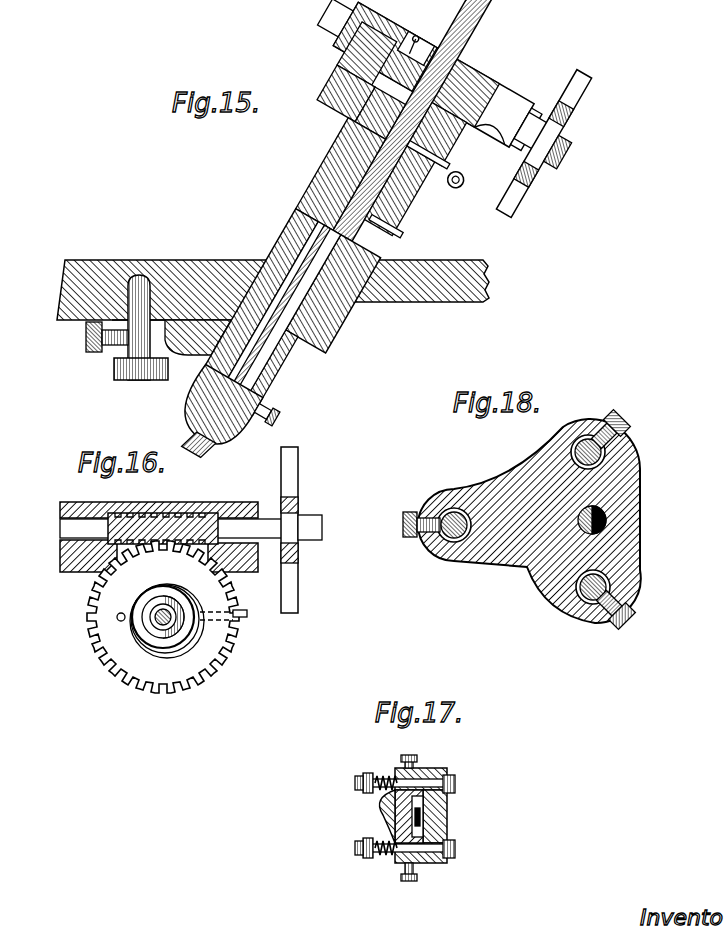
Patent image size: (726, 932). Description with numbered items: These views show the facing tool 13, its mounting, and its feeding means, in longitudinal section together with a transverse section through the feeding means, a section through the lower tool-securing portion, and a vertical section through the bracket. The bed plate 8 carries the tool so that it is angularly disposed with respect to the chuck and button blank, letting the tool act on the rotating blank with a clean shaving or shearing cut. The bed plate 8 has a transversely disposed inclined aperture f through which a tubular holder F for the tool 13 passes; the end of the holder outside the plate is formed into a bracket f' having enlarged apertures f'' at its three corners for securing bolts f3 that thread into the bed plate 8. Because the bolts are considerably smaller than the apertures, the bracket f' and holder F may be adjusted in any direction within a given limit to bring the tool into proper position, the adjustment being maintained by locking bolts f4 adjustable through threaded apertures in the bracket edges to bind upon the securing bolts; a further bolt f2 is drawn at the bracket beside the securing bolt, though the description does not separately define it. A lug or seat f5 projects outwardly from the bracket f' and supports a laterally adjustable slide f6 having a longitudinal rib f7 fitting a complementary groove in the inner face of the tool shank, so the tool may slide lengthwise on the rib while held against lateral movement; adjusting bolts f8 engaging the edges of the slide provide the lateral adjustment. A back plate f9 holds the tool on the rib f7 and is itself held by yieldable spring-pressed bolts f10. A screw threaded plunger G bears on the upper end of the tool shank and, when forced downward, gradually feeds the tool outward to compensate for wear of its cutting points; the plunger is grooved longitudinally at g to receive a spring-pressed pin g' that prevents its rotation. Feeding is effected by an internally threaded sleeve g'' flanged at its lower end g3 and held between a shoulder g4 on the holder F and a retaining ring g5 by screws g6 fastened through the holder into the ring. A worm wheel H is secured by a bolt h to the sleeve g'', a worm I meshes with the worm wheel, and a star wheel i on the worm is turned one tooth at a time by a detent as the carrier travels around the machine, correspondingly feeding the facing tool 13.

In FIG. 15, the bed plate 8 is at (217, 262).
In FIG. 15, the facing tool 13 is at (262, 398).
In FIG. 17, the facing tool 13 is at (426, 822).
In FIG. 18, the facing tool 13 is at (509, 585).
In FIG. 15, the tubular holder F is at (320, 178).
In FIG. 18, the tubular holder F is at (628, 525).
In FIG. 15, the screw threaded plunger G is at (300, 215).
In FIG. 16, the screw threaded plunger G is at (172, 606).
In FIG. 15, the worm wheel H is at (485, 80).
In FIG. 16, the worm wheel H is at (163, 617).
In FIG. 16, the worm I is at (178, 520).
In FIG. 15, the star wheel i is at (572, 110).
In FIG. 16, the star wheel i is at (295, 500).
In FIG. 15, the bolt h is at (413, 42).
In FIG. 16, the bolt h is at (121, 622).
In FIG. 15, the longitudinal groove g is at (418, 173).
In FIG. 16, the longitudinal groove g is at (173, 637).
In FIG. 15, the spring-pressed pin g' is at (468, 180).
In FIG. 16, the spring-pressed pin g' is at (236, 624).
In FIG. 15, the internally threaded sleeve g'' is at (416, 120).
In FIG. 15, the flange g3 is at (372, 118).
In FIG. 15, the shoulder g4 is at (360, 140).
In FIG. 15, the retaining ring g5 is at (360, 88).
In FIG. 15, the screws g6 is at (360, 68).
In FIG. 15, the inclined aperture f is at (251, 247).
In FIG. 15, the bracket f' is at (171, 333).
In FIG. 18, the bracket f' is at (529, 521).
In FIG. 15, the enlarged apertures f'' is at (134, 342).
In FIG. 18, the enlarged apertures f'' is at (519, 510).
In FIG. 15, the bolt f2 is at (86, 340).
In FIG. 15, the securing bolts f3 is at (114, 368).
In FIG. 18, the securing bolts f3 is at (453, 508).
In FIG. 18, the locking bolts f4 is at (650, 406).
In FIG. 15, the lug or seat f5 is at (205, 393).
In FIG. 15, the laterally adjustable slide f6 is at (208, 418).
In FIG. 17, the laterally adjustable slide f6 is at (385, 813).
In FIG. 15, the longitudinal rib f7 is at (272, 392).
In FIG. 17, the longitudinal rib f7 is at (448, 808).
In FIG. 17, the adjusting bolts f8 is at (416, 758).
In FIG. 17, the back plate f9 is at (432, 864).
In FIG. 15, the spring-pressed bolts f10 is at (275, 410).
In FIG. 17, the spring-pressed bolts f10 is at (355, 788).